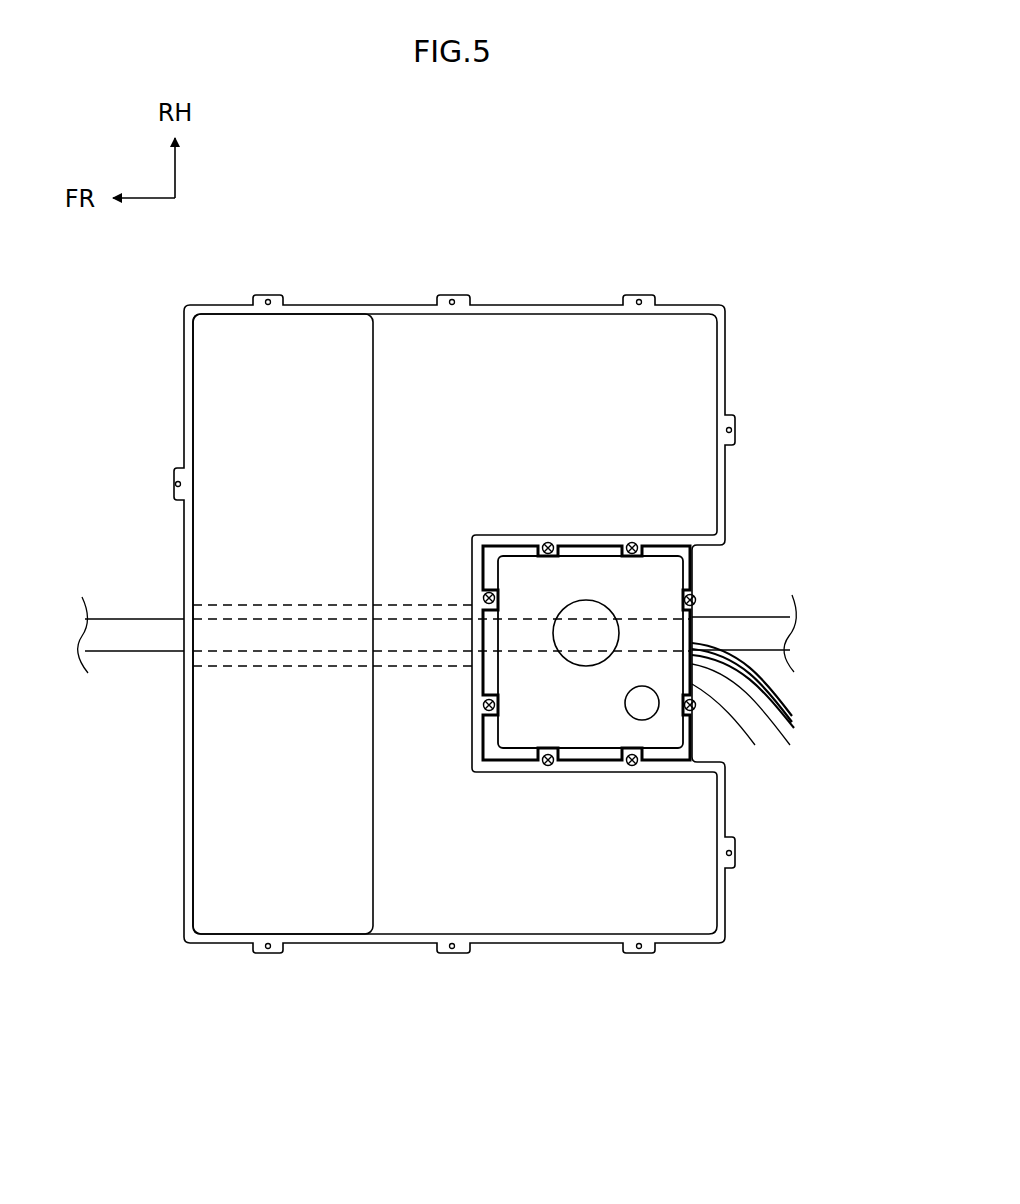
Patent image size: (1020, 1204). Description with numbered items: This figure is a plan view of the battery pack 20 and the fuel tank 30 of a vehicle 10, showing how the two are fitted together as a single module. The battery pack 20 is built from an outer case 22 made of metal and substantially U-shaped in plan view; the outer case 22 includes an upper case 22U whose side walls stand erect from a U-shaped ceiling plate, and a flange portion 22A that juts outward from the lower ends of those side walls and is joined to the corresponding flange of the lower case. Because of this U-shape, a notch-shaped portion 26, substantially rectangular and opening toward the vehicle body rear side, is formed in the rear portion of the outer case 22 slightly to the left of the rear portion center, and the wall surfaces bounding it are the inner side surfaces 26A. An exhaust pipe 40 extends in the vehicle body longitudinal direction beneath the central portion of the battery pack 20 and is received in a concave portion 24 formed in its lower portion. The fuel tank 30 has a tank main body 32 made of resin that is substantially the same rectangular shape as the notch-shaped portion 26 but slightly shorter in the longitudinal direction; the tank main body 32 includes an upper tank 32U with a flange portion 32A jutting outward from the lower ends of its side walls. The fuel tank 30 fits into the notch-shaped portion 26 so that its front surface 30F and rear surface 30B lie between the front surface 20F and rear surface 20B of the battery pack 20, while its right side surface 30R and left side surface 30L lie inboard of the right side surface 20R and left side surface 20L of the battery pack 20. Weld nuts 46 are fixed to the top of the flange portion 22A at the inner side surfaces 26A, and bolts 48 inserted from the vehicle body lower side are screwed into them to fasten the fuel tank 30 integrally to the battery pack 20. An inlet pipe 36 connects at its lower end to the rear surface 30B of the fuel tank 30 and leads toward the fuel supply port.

The drive unit 10 is at (747, 831).
The battery pack 20 is at (396, 310).
The right side surface 20R is at (487, 312).
The left side surface 20L is at (540, 950).
The front surface 20F is at (183, 805).
The rear surface 20B is at (723, 355).
The outer case 22 is at (519, 336).
The flange portion 22A is at (276, 294).
The upper case 22U is at (425, 895).
The concave portion 24 is at (245, 604).
The notch-shaped portion 26 is at (706, 553).
The inner side surfaces 26A is at (705, 768).
The fuel tank 30 is at (681, 548).
The right side surface 30R is at (524, 553).
The left side surface 30L is at (519, 775).
The front surface 30F is at (492, 672).
The rear surface 30B is at (698, 710).
The tank main body 32 is at (577, 578).
The flange portion 32A is at (698, 598).
The upper tank 32U is at (590, 706).
The inlet pipe 36 is at (781, 707).
The exhaust pipe 40 is at (140, 652).
The weld nut 46 is at (635, 546).
The bolt 48 is at (486, 595).